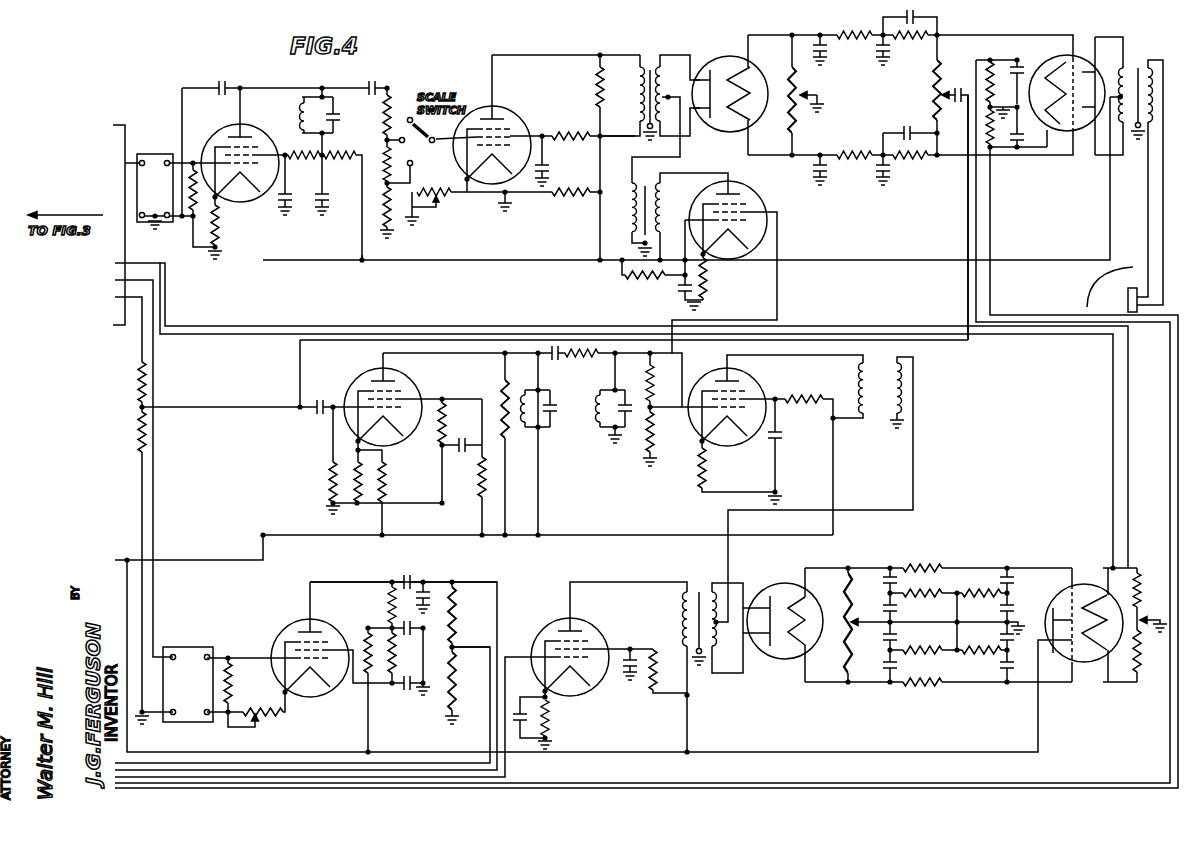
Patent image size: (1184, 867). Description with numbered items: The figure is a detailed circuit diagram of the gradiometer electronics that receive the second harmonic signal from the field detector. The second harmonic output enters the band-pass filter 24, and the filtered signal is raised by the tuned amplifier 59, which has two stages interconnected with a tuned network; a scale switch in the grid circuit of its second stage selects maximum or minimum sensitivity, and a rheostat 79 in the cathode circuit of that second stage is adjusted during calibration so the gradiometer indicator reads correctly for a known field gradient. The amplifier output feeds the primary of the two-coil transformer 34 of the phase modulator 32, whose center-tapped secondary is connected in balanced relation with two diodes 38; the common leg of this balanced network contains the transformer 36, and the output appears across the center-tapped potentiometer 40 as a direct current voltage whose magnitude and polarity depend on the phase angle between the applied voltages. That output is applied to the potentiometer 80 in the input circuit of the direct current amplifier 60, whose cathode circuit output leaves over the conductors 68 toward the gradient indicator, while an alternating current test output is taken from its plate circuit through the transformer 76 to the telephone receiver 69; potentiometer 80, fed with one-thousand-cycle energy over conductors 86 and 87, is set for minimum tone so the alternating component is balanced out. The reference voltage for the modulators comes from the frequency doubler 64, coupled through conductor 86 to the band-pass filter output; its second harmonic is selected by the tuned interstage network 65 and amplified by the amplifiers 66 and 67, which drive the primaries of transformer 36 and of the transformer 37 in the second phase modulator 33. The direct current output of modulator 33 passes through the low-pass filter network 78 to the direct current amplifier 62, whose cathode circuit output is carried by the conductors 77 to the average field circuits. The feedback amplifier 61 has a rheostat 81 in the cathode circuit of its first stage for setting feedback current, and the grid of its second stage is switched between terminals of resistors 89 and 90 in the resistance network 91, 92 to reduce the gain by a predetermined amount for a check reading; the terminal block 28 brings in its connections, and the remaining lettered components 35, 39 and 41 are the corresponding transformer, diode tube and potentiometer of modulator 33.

The second harmonic filter 24 is at (153, 154).
The terminal block 28 is at (192, 650).
The phase modulator 32 is at (836, 179).
The phase modulator 33 is at (763, 645).
The two-coil transformer 34 is at (648, 66).
The transformer 35 is at (692, 590).
The transformer 36 is at (658, 178).
The transformer 37 is at (870, 425).
The diodes 38 is at (722, 60).
The rectifier tube 39 is at (776, 660).
The center-tapped resistor or potentiometer 40 is at (805, 87).
The potentiometer 41 is at (850, 660).
The tuned amplifier 59 is at (177, 71).
The direct current amplifier 60 is at (1057, 55).
The amplifier 61 is at (419, 648).
The direct current amplifier 62 is at (1053, 567).
The frequency doubler 64 is at (416, 388).
The tuned interstage network 65 is at (578, 416).
The amplifier 66 is at (766, 212).
The amplifier 67 is at (758, 386).
The conductors 68 is at (978, 212).
The telephone receiver 69 is at (1133, 288).
The transformer 76 is at (1139, 67).
The conductors 77 is at (1113, 360).
The low-pass filter network 78 is at (938, 620).
The rheostat 79 is at (440, 200).
The potentiometer 80 is at (945, 68).
The rheostat 81 is at (263, 720).
The conductor 86 is at (204, 404).
The conductor 87 is at (952, 343).
The resistor 89 is at (456, 586).
The resistor 90 is at (453, 654).
The resistance network 91 is at (456, 607).
The resistance network 92 is at (455, 686).